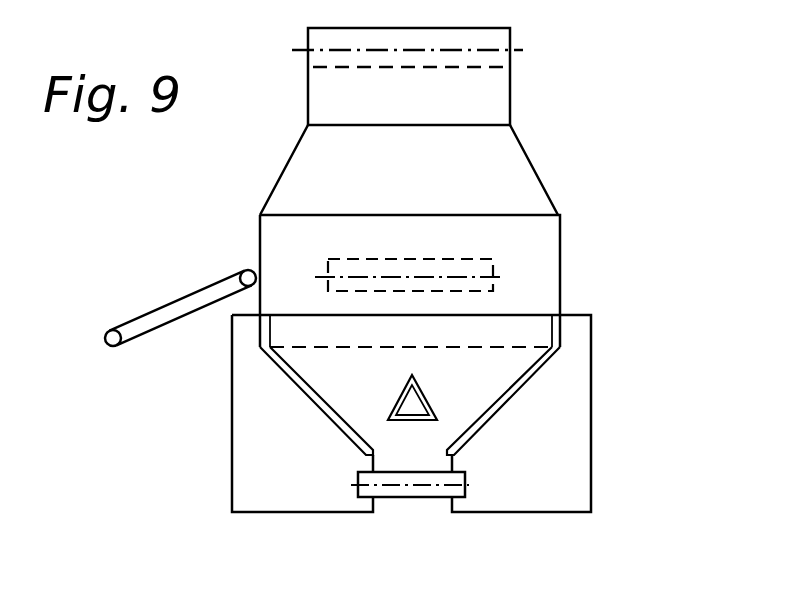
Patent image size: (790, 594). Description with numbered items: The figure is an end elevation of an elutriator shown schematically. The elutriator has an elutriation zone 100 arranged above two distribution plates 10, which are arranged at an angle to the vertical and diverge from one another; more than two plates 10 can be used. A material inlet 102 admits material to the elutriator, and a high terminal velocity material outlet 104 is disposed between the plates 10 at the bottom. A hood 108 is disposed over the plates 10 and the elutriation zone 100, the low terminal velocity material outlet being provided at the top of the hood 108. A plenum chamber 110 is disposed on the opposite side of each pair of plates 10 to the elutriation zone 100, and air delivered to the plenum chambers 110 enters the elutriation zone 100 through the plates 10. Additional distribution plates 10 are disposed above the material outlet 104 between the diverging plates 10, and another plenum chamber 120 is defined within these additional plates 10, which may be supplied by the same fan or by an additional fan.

The distribution plates 10 is at (295, 428).
The elutriation zone 100 is at (518, 288).
The material inlet 102 is at (254, 269).
The high terminal velocity material outlet 104 is at (437, 497).
The hood 108 is at (532, 163).
The plenum chamber 110 is at (263, 475).
The plenum chamber 120 is at (409, 407).